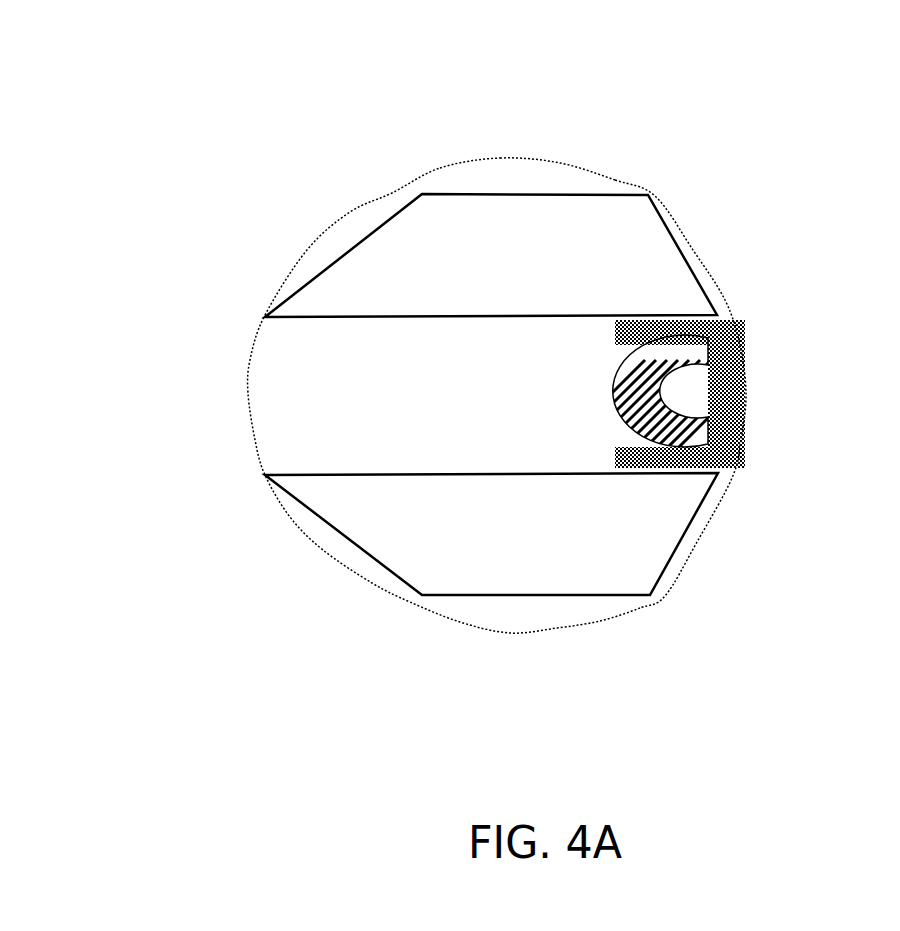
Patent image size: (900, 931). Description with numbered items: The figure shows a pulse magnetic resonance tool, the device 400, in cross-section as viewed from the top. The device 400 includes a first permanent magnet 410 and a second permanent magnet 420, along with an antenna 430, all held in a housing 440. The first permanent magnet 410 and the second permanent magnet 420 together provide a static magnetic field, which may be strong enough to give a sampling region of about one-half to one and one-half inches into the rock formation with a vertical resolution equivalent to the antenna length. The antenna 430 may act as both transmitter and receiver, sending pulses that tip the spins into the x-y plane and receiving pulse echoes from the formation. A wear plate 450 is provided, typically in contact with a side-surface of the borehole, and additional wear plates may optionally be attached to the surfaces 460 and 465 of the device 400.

The device 400 is at (508, 650).
The first permanent magnet 410 is at (445, 204).
The second permanent magnet 420 is at (370, 512).
The antenna 430 is at (620, 388).
The housing 440 is at (305, 250).
The wear plate 450 is at (722, 388).
The surface 460 is at (697, 542).
The surface 465 is at (693, 250).